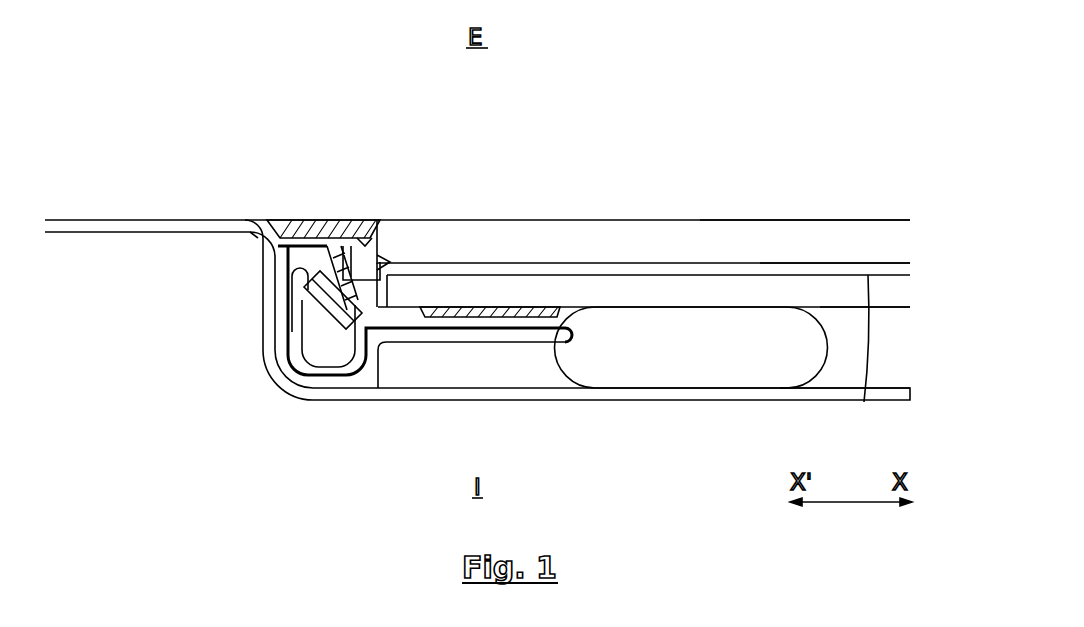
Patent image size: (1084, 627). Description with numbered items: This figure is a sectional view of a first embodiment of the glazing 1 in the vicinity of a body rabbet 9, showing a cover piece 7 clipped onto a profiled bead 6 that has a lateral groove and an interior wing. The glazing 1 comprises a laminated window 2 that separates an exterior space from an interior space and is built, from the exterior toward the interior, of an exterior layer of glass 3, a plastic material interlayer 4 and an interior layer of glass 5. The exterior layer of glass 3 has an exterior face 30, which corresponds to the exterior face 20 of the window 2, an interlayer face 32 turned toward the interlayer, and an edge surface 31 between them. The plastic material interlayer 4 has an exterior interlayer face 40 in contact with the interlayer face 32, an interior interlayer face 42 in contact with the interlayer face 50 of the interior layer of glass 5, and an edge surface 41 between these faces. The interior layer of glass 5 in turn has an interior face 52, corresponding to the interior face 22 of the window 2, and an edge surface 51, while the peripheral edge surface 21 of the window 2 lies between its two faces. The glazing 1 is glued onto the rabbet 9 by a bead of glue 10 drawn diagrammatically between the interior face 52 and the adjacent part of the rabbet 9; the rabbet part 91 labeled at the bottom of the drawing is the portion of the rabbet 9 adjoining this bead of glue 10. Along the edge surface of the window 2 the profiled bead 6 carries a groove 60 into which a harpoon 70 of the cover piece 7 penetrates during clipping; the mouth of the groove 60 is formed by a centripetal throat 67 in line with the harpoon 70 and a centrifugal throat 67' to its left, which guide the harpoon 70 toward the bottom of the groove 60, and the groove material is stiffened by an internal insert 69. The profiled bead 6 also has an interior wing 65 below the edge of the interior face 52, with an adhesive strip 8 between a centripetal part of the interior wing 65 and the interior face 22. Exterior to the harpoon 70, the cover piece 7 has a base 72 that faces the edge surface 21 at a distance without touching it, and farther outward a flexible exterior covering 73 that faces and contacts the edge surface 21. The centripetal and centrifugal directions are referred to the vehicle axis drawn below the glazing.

The glazing 1 is at (264, 72).
The window 2 is at (700, 197).
The exterior layer of glass 3 is at (900, 243).
The plastic material interlayer 4 is at (905, 268).
The interior layer of glass 5 is at (900, 290).
The profiled bead 6 is at (305, 405).
The cover piece 7 is at (252, 165).
The adhesive strip 8 is at (510, 315).
The rabbet 9 is at (90, 218).
The bead of glue 10 is at (662, 370).
The exterior face 30 is at (828, 189).
The exterior face 20 is at (877, 220).
The peripheral edge surface 21 is at (433, 252).
The interior face 52 is at (887, 343).
The interior face 22 is at (890, 308).
The edge surface 31 is at (388, 222).
The exterior interlayer face 40 is at (835, 219).
The interlayer face 32 is at (840, 263).
The edge surface 41 is at (388, 262).
The interlayer face 50 is at (875, 361).
The interior interlayer face 42 is at (864, 390).
The edge surface 51 is at (380, 257).
The groove 60 is at (320, 337).
The interior wing 65 is at (497, 336).
The centripetal throat 67 is at (396, 230).
The centrifugal throat 67' is at (249, 300).
The insert 69 is at (535, 331).
The harpoon 70 is at (323, 312).
The base 72 is at (297, 243).
The exterior covering 73 is at (267, 222).
The bottom wall 91 is at (813, 393).